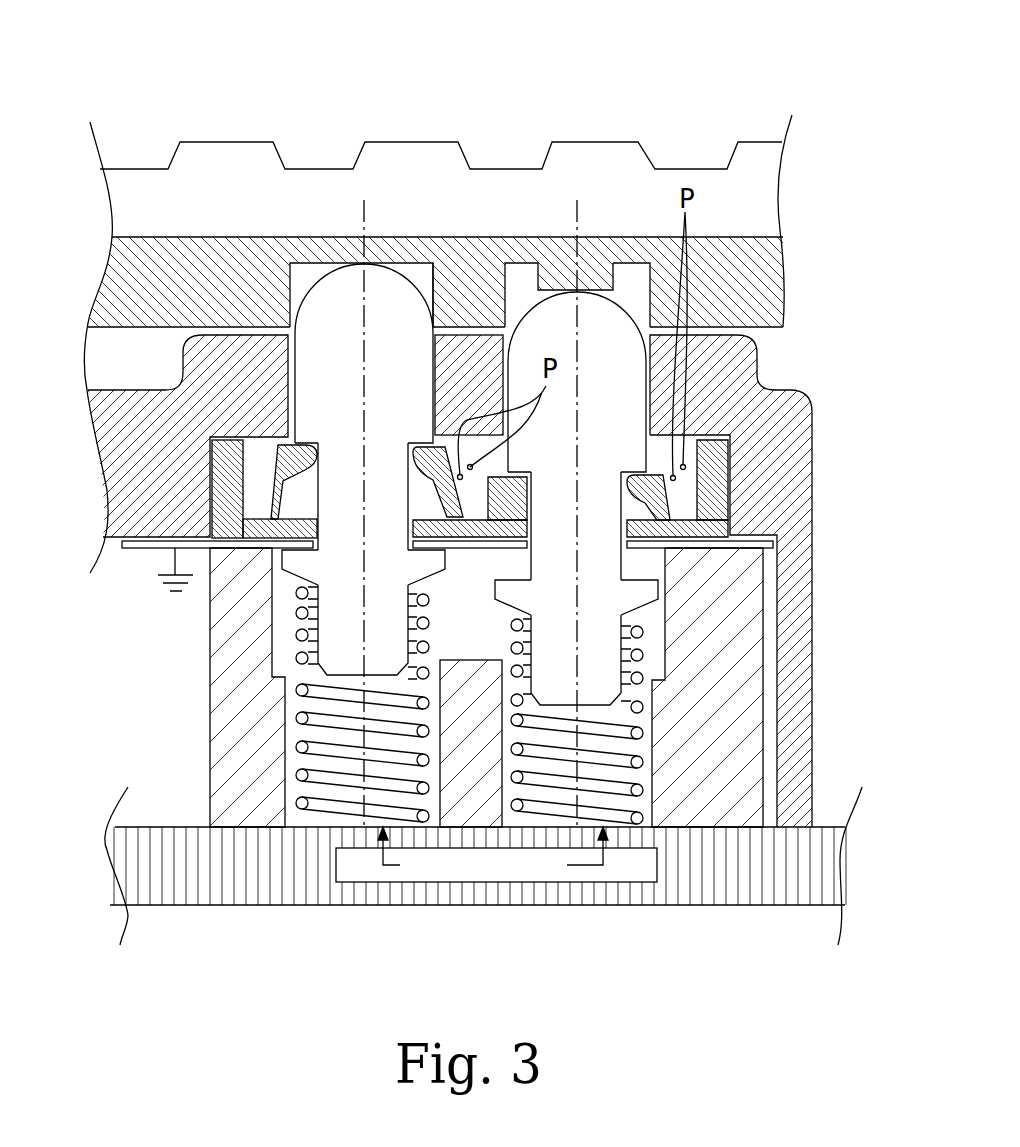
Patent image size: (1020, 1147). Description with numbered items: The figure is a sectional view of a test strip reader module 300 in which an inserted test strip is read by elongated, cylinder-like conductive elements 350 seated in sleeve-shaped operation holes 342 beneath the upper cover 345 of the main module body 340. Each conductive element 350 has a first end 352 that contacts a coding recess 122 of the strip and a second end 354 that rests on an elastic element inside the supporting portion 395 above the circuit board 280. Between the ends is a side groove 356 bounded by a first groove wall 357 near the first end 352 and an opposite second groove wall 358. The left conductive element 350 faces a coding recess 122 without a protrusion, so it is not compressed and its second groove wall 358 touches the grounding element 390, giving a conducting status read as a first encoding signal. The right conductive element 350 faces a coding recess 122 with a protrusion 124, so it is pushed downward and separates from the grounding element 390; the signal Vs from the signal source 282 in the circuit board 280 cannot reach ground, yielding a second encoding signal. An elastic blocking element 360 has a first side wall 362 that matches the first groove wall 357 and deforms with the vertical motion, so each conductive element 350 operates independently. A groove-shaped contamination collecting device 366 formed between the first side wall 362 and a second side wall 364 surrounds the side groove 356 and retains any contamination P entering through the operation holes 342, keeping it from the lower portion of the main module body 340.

The coding recess 122 is at (302, 277).
The protrusion 124 is at (555, 283).
The circuit board 280 is at (147, 867).
The signal source 282 is at (628, 862).
The test strip reader module 300 is at (768, 80).
The main module body 340 is at (812, 452).
The operation hole 342 is at (433, 263).
The upper cover 345 is at (748, 200).
The conductive element 350 is at (399, 390).
The first end 352 is at (323, 302).
The second end 354 is at (337, 643).
The side groove 356 is at (310, 497).
The first groove wall 357 is at (306, 440).
The second groove wall 358 is at (298, 556).
The blocking element 360 is at (715, 512).
The first side wall 362 is at (290, 448).
The second side wall 364 is at (227, 483).
The contamination collecting device 366 is at (258, 463).
The grounding element 390 is at (138, 543).
The supporting portion 395 is at (223, 738).